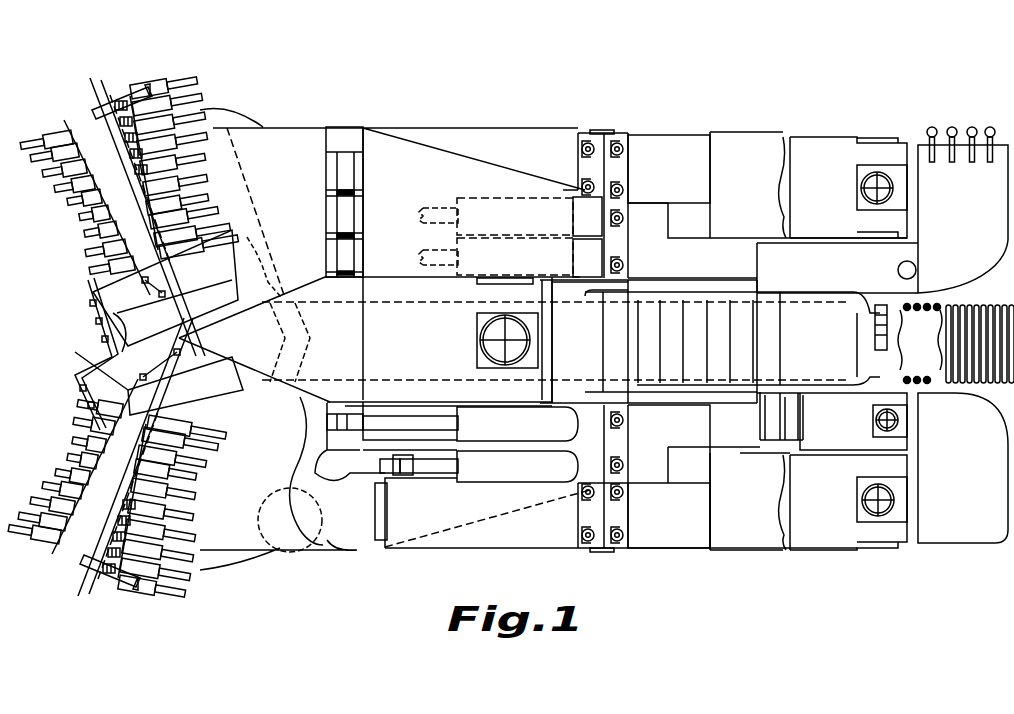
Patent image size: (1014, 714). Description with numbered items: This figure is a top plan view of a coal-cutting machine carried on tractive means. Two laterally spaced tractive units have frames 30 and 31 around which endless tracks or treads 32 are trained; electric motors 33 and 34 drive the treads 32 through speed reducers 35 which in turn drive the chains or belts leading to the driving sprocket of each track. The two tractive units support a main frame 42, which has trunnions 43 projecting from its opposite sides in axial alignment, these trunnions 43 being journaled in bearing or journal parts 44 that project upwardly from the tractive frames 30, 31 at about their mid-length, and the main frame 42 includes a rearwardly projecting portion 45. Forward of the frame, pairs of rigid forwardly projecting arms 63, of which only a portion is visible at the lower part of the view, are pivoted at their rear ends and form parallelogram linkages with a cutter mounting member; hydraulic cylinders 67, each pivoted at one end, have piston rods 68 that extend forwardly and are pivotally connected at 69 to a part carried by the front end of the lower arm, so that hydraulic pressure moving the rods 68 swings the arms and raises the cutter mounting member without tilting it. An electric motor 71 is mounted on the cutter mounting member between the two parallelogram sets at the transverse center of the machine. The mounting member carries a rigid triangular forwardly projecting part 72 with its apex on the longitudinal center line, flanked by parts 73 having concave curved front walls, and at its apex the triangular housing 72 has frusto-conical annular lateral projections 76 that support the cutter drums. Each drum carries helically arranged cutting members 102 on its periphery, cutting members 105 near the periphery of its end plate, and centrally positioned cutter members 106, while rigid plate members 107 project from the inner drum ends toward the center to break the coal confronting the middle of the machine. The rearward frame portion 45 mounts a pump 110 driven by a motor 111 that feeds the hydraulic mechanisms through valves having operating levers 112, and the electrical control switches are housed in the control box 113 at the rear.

The frame 30 is at (668, 148).
The frame 31 is at (670, 537).
The endless tracks or treads 32 is at (378, 542).
The electric motor 33 is at (817, 150).
The electric motor 34 is at (822, 542).
The speed reducer 35 is at (750, 138).
The main frame 42 is at (712, 258).
The trunnions 43 is at (600, 130).
The bearing or journal parts 44 is at (582, 168).
The rearwardly projecting portion 45 is at (912, 428).
The rigid forwardly projecting arms 63 is at (378, 140).
The hydraulic cylinders 67 is at (467, 270).
The piston rod 68 is at (430, 260).
The pivotal connection 69 is at (343, 414).
The electric motor 71 is at (375, 305).
The triangular forwardly projecting part 72 is at (313, 310).
The parts 73 is at (296, 138).
The annular lateral projections 76 is at (222, 308).
The cutting members 102 is at (72, 206).
The cutting members 105 is at (63, 114).
The cutter members 106 is at (110, 100).
The plate members 107 is at (80, 352).
The pump 110 is at (773, 432).
The motor 111 is at (830, 433).
The operating levers 112 is at (990, 126).
The control box 113 is at (953, 533).